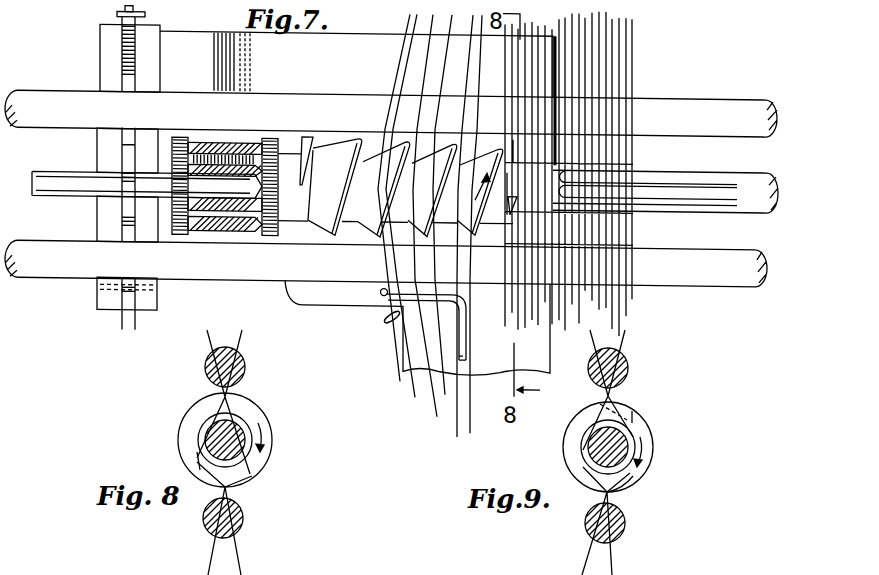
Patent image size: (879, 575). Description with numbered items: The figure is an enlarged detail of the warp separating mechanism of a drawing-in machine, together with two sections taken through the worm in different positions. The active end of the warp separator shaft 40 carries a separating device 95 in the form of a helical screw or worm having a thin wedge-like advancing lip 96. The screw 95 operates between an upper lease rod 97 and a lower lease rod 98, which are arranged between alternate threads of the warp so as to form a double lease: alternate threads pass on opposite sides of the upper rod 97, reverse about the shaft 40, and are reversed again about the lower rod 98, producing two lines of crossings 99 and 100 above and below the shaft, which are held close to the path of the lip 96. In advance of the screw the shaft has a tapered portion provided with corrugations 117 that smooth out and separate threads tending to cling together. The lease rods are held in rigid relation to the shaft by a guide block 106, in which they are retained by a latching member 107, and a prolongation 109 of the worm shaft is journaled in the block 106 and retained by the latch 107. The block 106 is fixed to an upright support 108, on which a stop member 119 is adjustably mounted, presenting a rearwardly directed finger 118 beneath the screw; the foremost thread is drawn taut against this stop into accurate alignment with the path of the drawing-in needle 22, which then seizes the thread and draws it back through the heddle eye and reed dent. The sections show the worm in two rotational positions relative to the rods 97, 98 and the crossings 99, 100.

In FIG. 7, the drawing-in needle 22 is at (384, 317).
In FIG. 7, the warp separator shaft 40 is at (745, 190).
In FIG. 9, the warp separator shaft 40 is at (593, 447).
In FIG. 7, the separating device 95 is at (347, 152).
In FIG. 8, the separating device 95 is at (255, 462).
In FIG. 9, the separating device 95 is at (650, 437).
In FIG. 7, the advancing lip 96 is at (503, 211).
In FIG. 8, the advancing lip 96 is at (195, 462).
In FIG. 9, the advancing lip 96 is at (634, 418).
In FIG. 7, the upper lease rod 97 is at (72, 106).
In FIG. 8, the upper lease rod 97 is at (232, 365).
In FIG. 9, the upper lease rod 97 is at (620, 370).
In FIG. 7, the lower lease rod 98 is at (40, 251).
In FIG. 8, the lower lease rod 98 is at (232, 518).
In FIG. 9, the lower lease rod 98 is at (620, 522).
In FIG. 7, the upper line of crossings 99 is at (626, 150).
In FIG. 9, the upper line of crossings 99 is at (602, 405).
In FIG. 7, the lower line of crossings 100 is at (627, 224).
In FIG. 9, the lower line of crossings 100 is at (633, 482).
In FIG. 7, the guide block 106 is at (105, 297).
In FIG. 7, the latching member 107 is at (127, 153).
In FIG. 7, the upright support 108 is at (445, 359).
In FIG. 7, the prolongation 109 is at (63, 197).
In FIG. 7, the corrugations 117 is at (647, 186).
In FIG. 7, the stop finger 118 is at (382, 291).
In FIG. 7, the stop member 119 is at (468, 342).